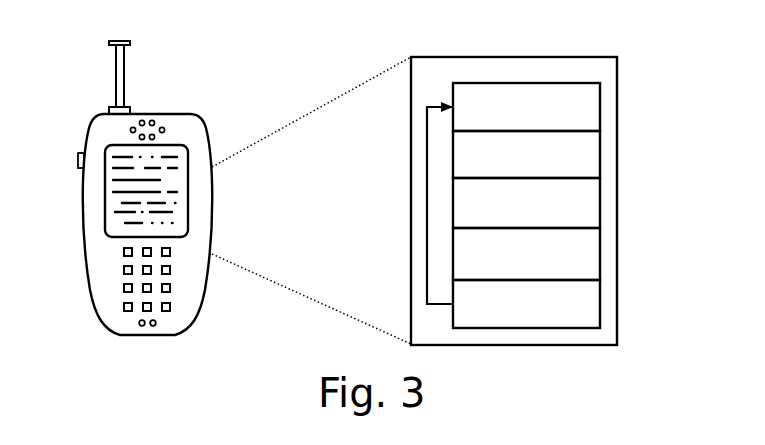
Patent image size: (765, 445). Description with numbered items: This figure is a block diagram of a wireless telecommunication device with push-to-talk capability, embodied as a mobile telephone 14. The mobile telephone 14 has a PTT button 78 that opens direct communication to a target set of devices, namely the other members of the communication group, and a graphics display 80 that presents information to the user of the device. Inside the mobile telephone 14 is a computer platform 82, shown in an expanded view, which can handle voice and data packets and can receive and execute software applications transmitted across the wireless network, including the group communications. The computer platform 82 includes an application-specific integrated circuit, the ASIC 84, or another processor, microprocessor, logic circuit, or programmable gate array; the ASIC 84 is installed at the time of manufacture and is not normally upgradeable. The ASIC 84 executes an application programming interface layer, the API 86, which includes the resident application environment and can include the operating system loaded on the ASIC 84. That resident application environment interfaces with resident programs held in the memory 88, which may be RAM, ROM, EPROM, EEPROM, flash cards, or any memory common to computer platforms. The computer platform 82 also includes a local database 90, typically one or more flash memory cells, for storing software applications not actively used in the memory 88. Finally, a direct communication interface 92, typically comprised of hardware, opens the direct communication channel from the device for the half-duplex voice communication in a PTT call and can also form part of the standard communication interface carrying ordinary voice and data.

The mobile telephone 14 is at (180, 115).
The PTT button 78 is at (70, 156).
The graphics display 80 is at (95, 199).
The computer platform 82 is at (411, 172).
The application-specific integrated circuit (ASIC) 84 is at (600, 203).
The application programming interface (API) layer 86 is at (600, 157).
The memory 88 is at (600, 108).
The local database 90 is at (600, 288).
The direct communication interface 92 is at (600, 252).